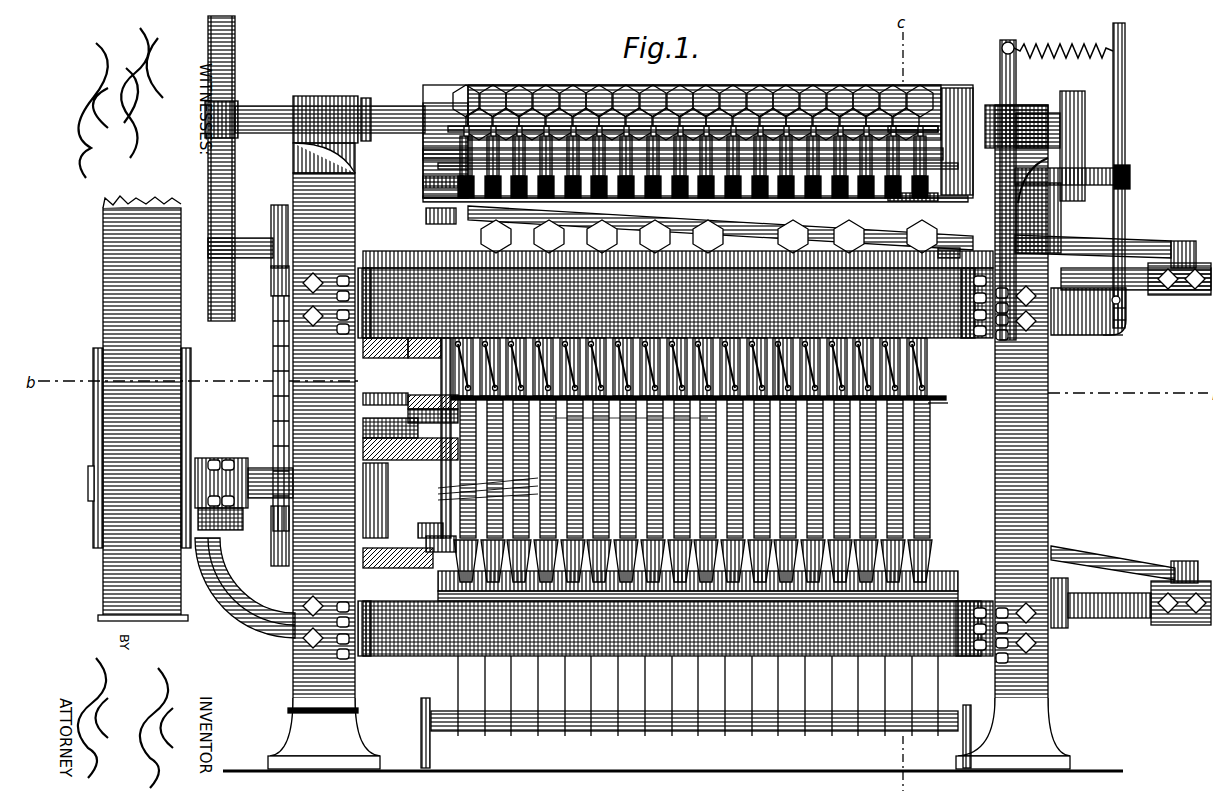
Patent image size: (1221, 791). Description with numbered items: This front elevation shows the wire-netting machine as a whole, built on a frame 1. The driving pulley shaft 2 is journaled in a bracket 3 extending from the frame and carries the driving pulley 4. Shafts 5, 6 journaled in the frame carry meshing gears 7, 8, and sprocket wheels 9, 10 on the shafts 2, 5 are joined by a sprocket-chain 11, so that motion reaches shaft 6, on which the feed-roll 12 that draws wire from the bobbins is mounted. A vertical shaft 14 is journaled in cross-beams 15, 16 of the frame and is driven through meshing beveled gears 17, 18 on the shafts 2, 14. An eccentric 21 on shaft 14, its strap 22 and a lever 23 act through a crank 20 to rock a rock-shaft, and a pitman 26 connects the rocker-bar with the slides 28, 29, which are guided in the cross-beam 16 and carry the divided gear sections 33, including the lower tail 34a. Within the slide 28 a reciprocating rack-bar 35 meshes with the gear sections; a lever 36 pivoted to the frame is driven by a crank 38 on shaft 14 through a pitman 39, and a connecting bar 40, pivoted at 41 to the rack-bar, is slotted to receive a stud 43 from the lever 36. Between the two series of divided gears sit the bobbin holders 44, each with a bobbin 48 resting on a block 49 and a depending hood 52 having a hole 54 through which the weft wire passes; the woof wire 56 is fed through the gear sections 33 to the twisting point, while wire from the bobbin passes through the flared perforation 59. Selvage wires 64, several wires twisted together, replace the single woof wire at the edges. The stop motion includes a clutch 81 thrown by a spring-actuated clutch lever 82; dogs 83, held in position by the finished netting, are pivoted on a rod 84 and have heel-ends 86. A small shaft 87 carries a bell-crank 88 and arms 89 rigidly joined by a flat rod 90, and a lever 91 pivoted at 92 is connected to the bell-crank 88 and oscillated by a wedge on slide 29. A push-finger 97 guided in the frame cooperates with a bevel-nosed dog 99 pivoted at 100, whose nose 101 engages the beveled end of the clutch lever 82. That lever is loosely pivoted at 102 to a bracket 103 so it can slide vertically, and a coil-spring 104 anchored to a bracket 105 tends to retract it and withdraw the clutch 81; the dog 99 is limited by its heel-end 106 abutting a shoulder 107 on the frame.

The frame 1 is at (1056, 452).
The driving pulley shaft 2 is at (252, 462).
The bracket 3 is at (222, 622).
The driving pulley 4 is at (90, 540).
The shaft 5 is at (245, 240).
The shaft 6 is at (256, 100).
The meshing gear 7 is at (232, 230).
The meshing gear 8 is at (222, 167).
The sprocket wheel 9 is at (265, 512).
The sprocket wheel 10 is at (263, 272).
The sprocket-chain 11 is at (265, 340).
The feed-roll 12 is at (430, 80).
The vertical shaft 14 is at (435, 345).
The cross-beam 15 is at (405, 335).
The cross-beam 16 is at (398, 660).
The beveled gear 17 is at (385, 500).
The beveled gear 18 is at (420, 452).
The crank 20 is at (390, 428).
The eccentric 21 is at (433, 393).
The strap 22 is at (433, 412).
The lever 23 is at (400, 376).
The pitman 26 is at (385, 560).
The slide 28 is at (675, 462).
The slide 29 is at (370, 244).
The divided gear section 33 is at (699, 236).
The tail of divided gear section 34a is at (890, 590).
The rack-bar 35 is at (1125, 288).
The lever 36 is at (793, 236).
The crank 38 is at (420, 208).
The pitman 39 is at (425, 526).
The connecting bar 40 is at (948, 230).
The pivot 41 is at (1173, 234).
The stud 43 is at (850, 400).
The bobbin holder 44 is at (690, 338).
The bobbin 48 is at (800, 480).
The block 49 is at (810, 560).
The hood 52 is at (895, 415).
The hole 54 is at (820, 338).
The woof wire 56 is at (473, 492).
The perforation 59 is at (762, 236).
The selvage wires 64 is at (418, 191).
The clutch 81 is at (913, 122).
The clutch lever 82 is at (1117, 78).
The dogs 83 is at (693, 120).
The rod 84 is at (700, 167).
The heel-end 86 is at (496, 236).
The small shaft 87 is at (360, 108).
The bell-crank 88 is at (1030, 125).
The arms 89 is at (415, 172).
The flat rod 90 is at (900, 194).
The lever 91 is at (1038, 203).
The pivot 92 is at (951, 249).
The push-finger 97 is at (1105, 328).
The dog 99 is at (1118, 295).
The pivot 100 is at (1120, 305).
The beveled nose 101 is at (1120, 238).
The pivot 102 is at (1138, 177).
The bracket 103 is at (1100, 162).
The coil-spring 104 is at (1048, 36).
The bracket 105 is at (1008, 68).
The heel-end 106 is at (1118, 318).
The shoulder 107 is at (1112, 328).